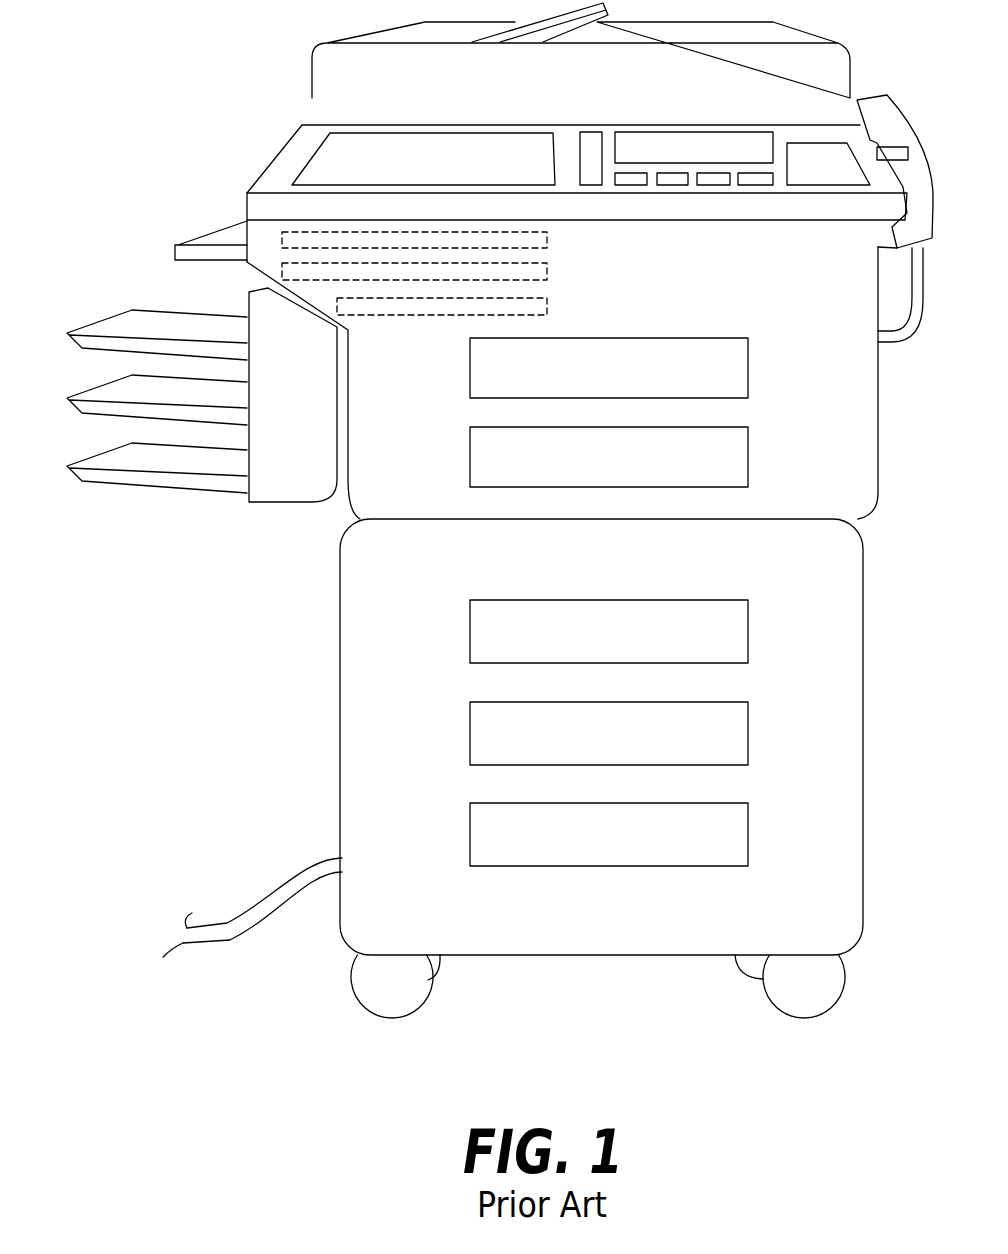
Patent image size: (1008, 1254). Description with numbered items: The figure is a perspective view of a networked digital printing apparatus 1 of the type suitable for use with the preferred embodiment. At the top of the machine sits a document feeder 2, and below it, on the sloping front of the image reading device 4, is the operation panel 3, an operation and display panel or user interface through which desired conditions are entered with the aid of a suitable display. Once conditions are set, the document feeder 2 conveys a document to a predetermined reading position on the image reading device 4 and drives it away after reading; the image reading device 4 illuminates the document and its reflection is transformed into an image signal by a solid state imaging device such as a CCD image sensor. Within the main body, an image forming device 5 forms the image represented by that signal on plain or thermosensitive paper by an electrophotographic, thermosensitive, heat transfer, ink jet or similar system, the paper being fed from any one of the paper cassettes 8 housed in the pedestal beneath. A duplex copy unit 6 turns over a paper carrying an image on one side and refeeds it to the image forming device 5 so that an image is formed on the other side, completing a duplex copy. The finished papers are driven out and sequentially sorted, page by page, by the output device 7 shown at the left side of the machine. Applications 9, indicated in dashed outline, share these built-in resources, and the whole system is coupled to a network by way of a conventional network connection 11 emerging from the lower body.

The digital printing apparatus 1 is at (276, 671).
The document feeder 2 is at (838, 50).
The operation panel 3 is at (328, 140).
The image reading device 4 is at (258, 167).
The image forming device 5 is at (742, 373).
The duplex copy unit 6 is at (740, 458).
The output device 7 is at (151, 496).
The paper cassettes 8 is at (745, 643).
The applications 9 is at (553, 269).
The network connection 11 is at (227, 923).